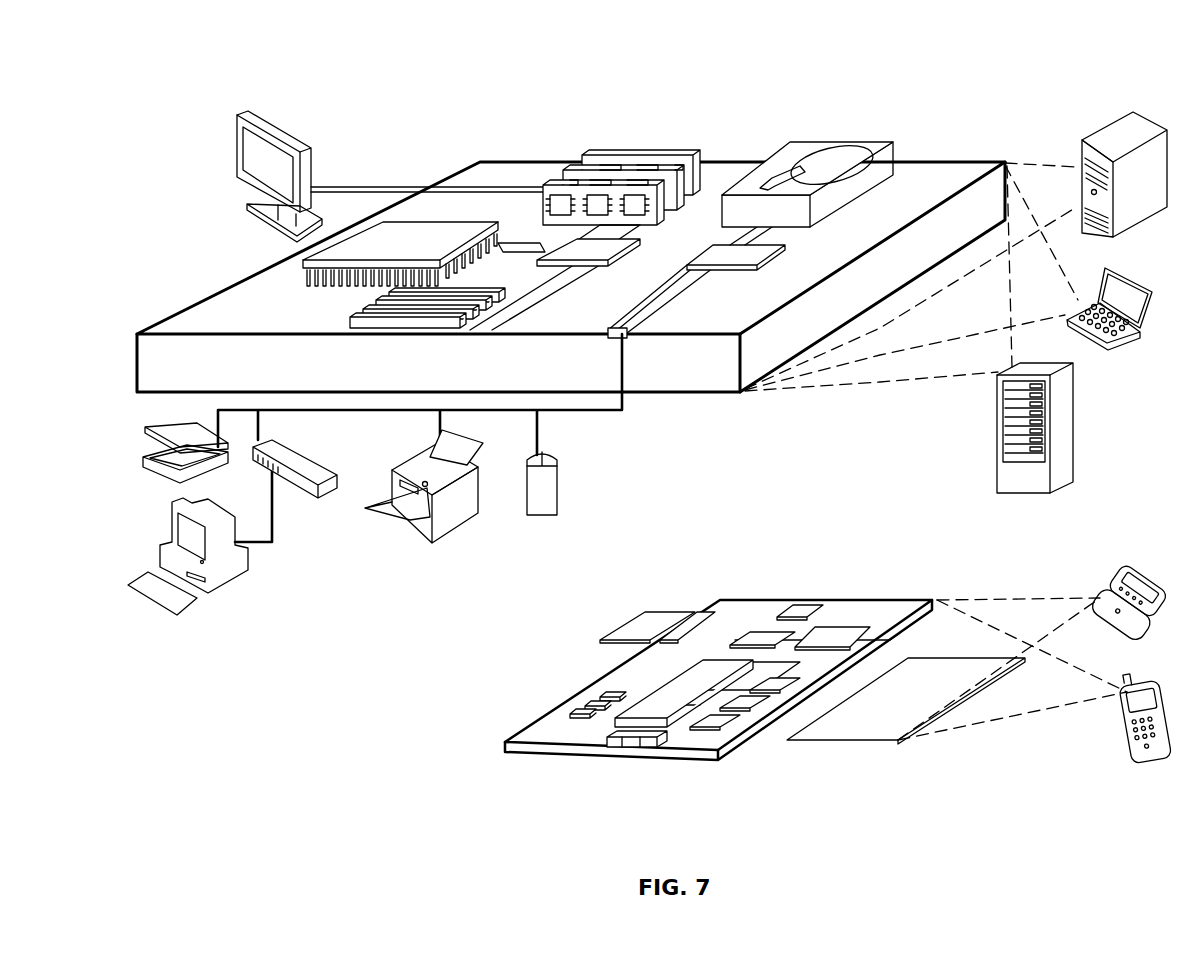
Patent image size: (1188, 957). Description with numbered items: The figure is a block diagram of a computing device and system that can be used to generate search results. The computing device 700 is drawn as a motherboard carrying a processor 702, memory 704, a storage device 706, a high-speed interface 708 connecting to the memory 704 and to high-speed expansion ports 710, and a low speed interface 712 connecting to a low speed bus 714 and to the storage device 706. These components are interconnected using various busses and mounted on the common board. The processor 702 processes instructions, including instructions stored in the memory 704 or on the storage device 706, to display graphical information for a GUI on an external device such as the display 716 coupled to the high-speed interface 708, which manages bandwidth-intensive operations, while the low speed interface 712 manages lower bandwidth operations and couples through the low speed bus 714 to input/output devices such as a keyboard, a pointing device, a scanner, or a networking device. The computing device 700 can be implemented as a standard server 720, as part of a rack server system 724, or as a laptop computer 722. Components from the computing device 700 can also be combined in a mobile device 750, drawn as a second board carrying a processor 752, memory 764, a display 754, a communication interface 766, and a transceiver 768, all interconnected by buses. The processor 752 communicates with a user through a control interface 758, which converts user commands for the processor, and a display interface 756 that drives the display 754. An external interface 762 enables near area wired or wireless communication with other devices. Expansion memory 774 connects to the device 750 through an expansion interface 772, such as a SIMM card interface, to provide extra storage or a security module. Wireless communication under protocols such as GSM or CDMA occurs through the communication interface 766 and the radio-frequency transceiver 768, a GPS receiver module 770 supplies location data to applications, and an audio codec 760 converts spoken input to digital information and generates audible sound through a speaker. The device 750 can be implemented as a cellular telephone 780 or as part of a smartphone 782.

The computing device 700 is at (402, 84).
The processor 702 is at (303, 268).
The memory 704 is at (597, 152).
The storage device 706 is at (807, 143).
The high-speed interface 708 is at (560, 245).
The high-speed expansion ports 710 is at (363, 303).
The low speed interface 712 is at (735, 255).
The low speed bus 714 is at (630, 338).
The display 716 is at (237, 118).
The standard server 720 is at (1082, 146).
The laptop computer 722 is at (1100, 272).
The rack server system 724 is at (1000, 450).
The mobile computing device 750 is at (701, 578).
The processor 752 is at (663, 733).
The display 754 is at (900, 740).
The display interface 756 is at (732, 748).
The control interface 758 is at (757, 708).
The audio codec 760 is at (772, 684).
The external interface 762 is at (630, 742).
The memory 764 is at (587, 707).
The communication interface 766 is at (763, 633).
The transceiver 768 is at (837, 633).
The GPS receiver module 770 is at (803, 601).
The expansion interface 772 is at (700, 612).
The expansion memory 774 is at (640, 612).
The cellular telephone 780 is at (1148, 552).
The smartphone 782 is at (1128, 680).